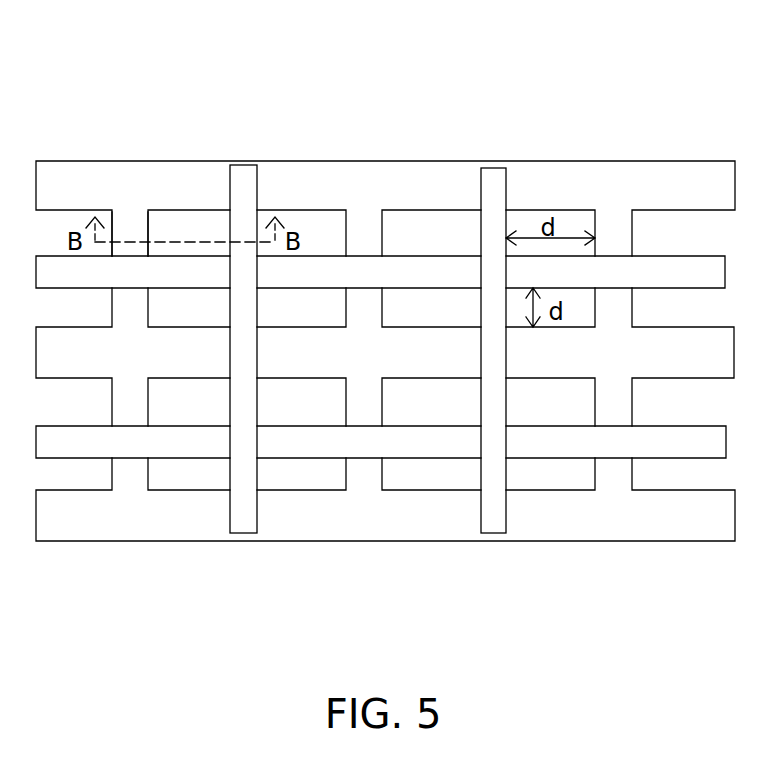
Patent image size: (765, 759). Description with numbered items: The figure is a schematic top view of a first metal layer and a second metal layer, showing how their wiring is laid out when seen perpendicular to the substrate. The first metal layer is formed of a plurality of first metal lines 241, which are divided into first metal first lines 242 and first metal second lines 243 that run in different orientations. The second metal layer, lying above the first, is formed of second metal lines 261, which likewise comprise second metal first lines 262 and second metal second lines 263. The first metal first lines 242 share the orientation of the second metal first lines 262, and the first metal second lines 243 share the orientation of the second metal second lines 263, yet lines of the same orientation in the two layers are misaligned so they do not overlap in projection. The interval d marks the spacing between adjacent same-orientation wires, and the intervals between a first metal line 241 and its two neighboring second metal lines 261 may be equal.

The first metal lines 241 is at (97, 86).
The first metal first lines 242 is at (270, 188).
The first metal second lines 243 is at (125, 237).
The second metal lines 261 is at (213, 615).
The second metal first lines 262 is at (367, 276).
The second metal second lines 263 is at (245, 488).